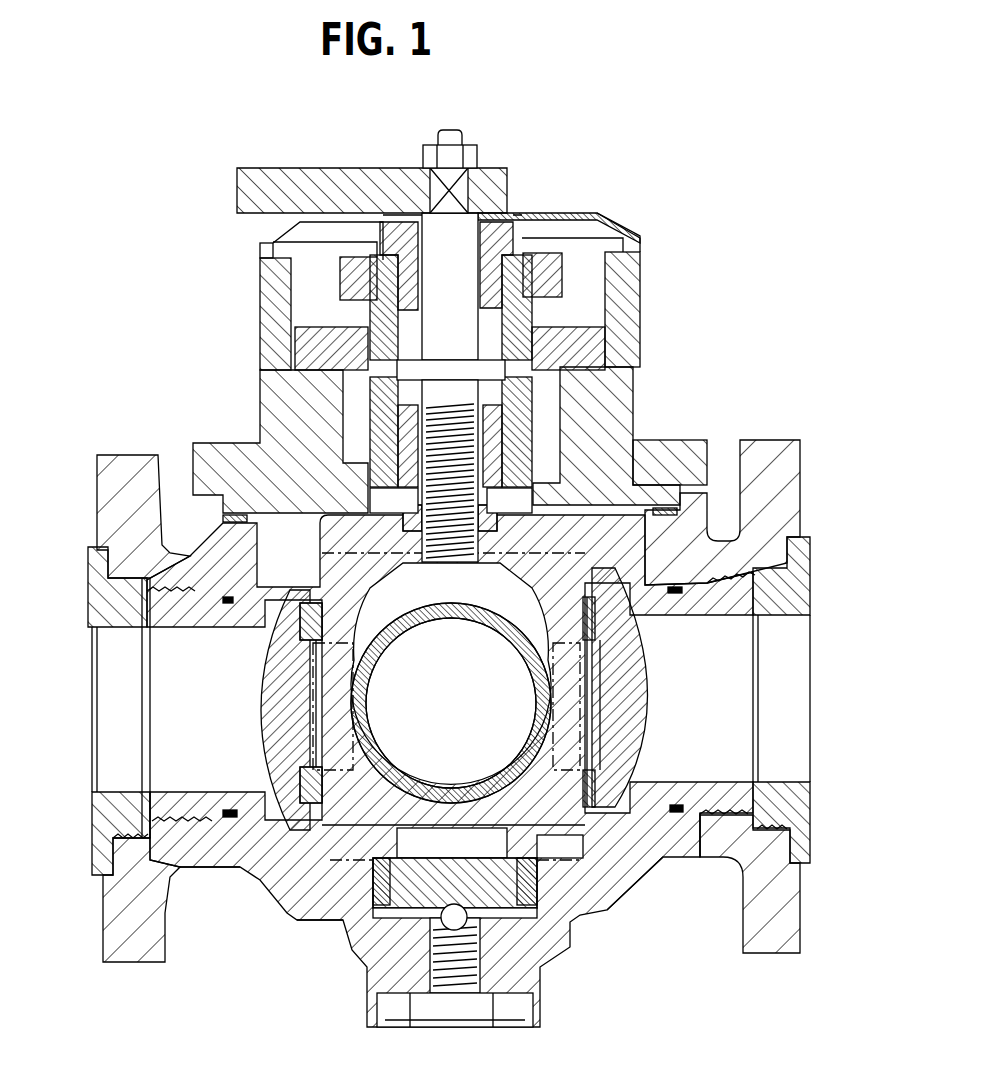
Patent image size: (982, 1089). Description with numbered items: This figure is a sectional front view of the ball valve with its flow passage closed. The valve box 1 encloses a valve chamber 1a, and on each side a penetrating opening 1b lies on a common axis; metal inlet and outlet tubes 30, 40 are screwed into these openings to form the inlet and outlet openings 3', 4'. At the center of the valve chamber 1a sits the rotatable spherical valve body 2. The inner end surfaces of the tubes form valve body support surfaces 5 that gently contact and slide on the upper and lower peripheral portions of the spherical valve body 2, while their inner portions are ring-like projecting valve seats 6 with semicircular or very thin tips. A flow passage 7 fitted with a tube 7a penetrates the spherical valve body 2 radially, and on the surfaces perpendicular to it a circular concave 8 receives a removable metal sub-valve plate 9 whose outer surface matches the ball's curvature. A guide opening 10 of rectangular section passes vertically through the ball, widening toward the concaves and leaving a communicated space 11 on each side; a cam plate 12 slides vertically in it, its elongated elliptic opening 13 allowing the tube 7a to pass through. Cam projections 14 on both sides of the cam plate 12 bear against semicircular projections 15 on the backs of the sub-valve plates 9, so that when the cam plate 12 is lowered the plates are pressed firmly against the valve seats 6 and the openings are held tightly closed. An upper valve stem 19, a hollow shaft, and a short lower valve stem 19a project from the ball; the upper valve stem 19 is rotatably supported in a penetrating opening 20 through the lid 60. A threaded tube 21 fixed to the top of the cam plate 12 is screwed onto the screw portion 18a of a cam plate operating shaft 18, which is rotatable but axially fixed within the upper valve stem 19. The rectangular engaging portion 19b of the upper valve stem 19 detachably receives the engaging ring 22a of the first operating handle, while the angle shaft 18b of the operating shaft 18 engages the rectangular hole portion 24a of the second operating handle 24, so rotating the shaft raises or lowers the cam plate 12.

The valve box 1 is at (297, 910).
The valve chamber 1a is at (603, 830).
The penetrating opening 1b is at (675, 595).
The spherical valve body 2 is at (305, 827).
The inlet opening 3' is at (799, 700).
The outlet opening 4' is at (111, 708).
The valve body support surface 5 is at (287, 823).
The ring-like projecting valve seat 6 is at (630, 783).
The flow passage 7 is at (465, 733).
The tube 7a is at (483, 620).
The circular concave 8 is at (590, 783).
The sub-valve plate 9 is at (277, 742).
The guide opening 10 is at (623, 510).
The communicated space 11 is at (587, 618).
The cam plate 12 is at (560, 807).
The elliptic opening 13 is at (380, 607).
The cam projection 14 is at (583, 638).
The projection 15 is at (595, 690).
The cam plate operating shaft 18 is at (457, 253).
The screw portion 18a is at (427, 437).
The angle shaft 18b is at (473, 190).
The upper valve stem 19 is at (523, 317).
The lower valve stem 19a is at (530, 958).
The engaging portion 19b is at (598, 212).
The penetrating opening 20 is at (533, 480).
The threaded tube 21 is at (403, 507).
The engaging ring 22a is at (547, 275).
The second operating handle 24 is at (270, 185).
The rectangular hole portion 24a is at (477, 165).
The inlet tube 30 is at (733, 573).
The outlet tube 40 is at (177, 807).
The lid 60 is at (680, 453).